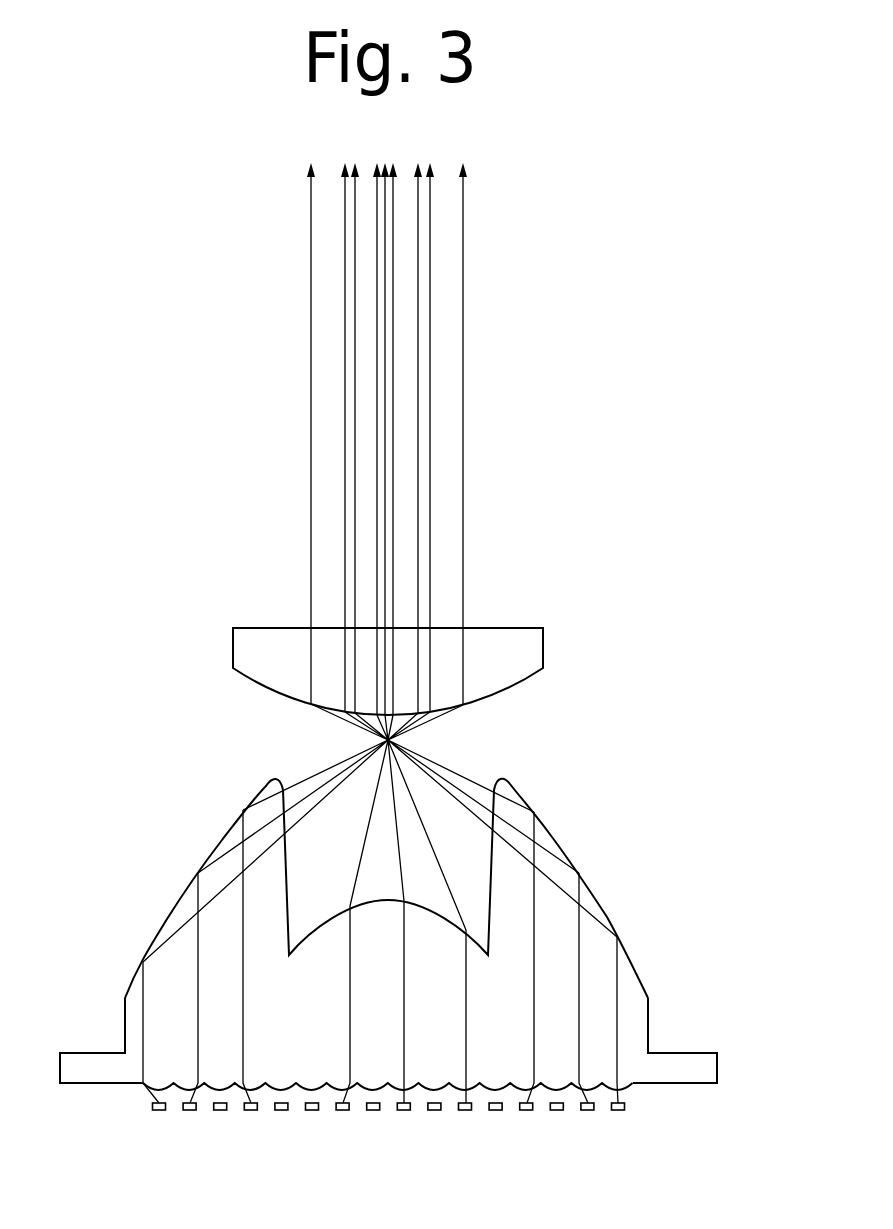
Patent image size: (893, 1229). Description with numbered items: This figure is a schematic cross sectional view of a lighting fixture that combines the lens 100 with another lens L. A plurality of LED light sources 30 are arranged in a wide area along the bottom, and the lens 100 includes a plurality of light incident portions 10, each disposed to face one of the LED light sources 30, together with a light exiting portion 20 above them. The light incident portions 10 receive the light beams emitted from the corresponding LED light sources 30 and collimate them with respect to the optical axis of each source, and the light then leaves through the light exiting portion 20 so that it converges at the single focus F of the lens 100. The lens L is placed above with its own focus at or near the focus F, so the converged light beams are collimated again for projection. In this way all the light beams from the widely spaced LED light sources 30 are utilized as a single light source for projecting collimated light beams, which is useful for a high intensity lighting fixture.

The lens L is at (545, 648).
The focus F is at (392, 740).
The lens 100 is at (388, 944).
The light exiting portion 20 is at (587, 880).
The light incident portions 10 is at (152, 1090).
The LED light sources 30 is at (159, 1110).